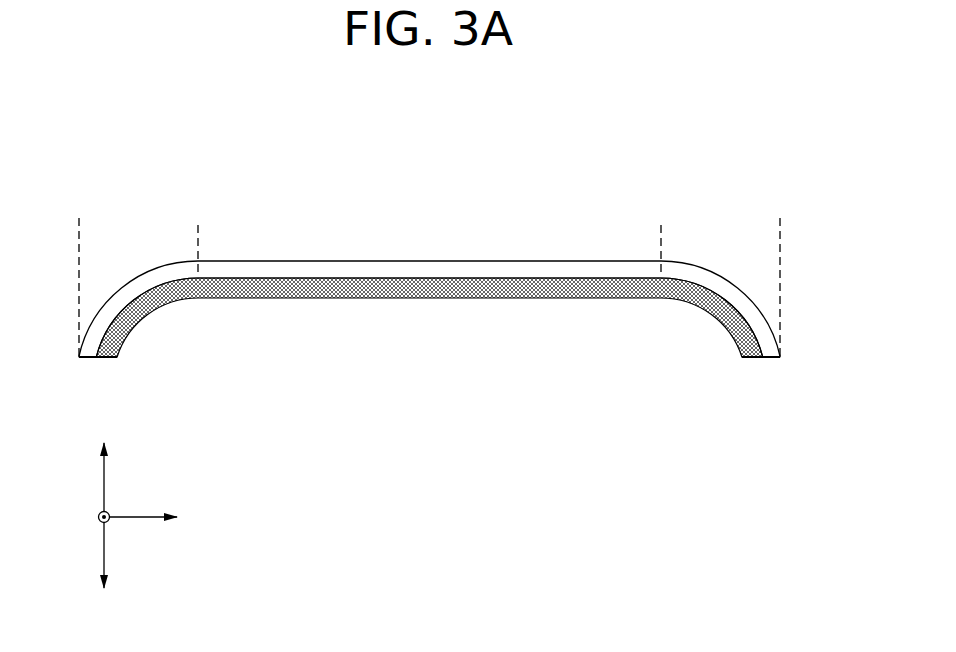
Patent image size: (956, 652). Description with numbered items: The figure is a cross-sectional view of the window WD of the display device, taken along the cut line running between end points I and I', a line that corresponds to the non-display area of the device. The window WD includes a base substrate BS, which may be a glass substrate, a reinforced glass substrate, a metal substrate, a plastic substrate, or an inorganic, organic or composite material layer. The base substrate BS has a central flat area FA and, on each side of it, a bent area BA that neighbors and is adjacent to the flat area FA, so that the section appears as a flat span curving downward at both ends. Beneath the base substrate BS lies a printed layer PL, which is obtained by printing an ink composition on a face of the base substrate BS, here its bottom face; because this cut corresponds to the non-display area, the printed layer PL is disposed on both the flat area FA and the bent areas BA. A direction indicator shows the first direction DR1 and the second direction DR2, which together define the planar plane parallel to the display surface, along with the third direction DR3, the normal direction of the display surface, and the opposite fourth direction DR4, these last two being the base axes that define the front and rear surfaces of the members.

The window WD is at (758, 186).
The base substrate BS is at (357, 272).
The printed layer PL is at (127, 327).
The bent area BA is at (198, 225).
The flat area FA is at (661, 225).
The line I-I' end point I is at (78, 375).
The line I-I' end point I' is at (784, 374).
The first direction DR1 is at (164, 518).
The second direction DR2 is at (81, 518).
The third direction DR3 is at (104, 467).
The fourth direction DR4 is at (104, 568).